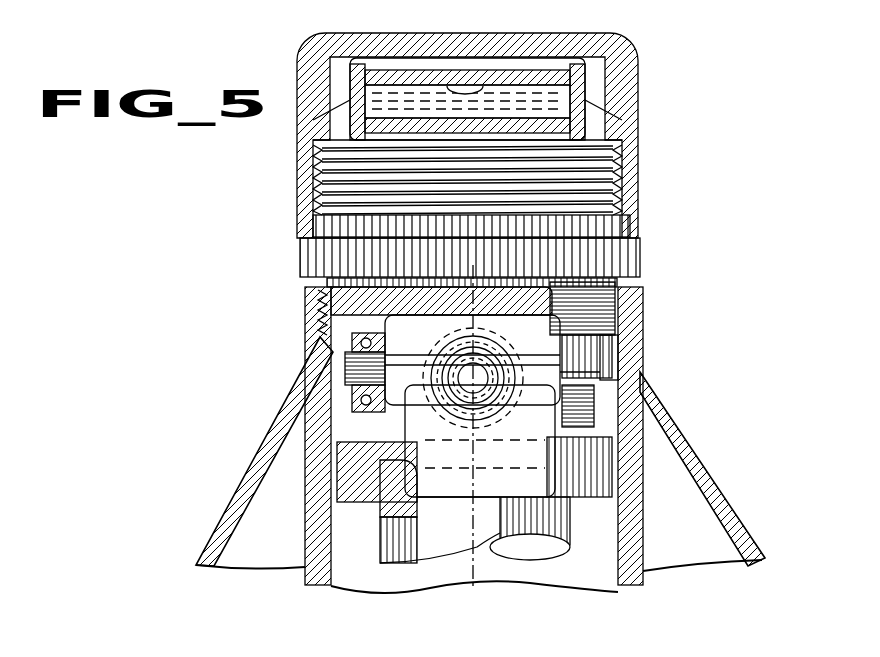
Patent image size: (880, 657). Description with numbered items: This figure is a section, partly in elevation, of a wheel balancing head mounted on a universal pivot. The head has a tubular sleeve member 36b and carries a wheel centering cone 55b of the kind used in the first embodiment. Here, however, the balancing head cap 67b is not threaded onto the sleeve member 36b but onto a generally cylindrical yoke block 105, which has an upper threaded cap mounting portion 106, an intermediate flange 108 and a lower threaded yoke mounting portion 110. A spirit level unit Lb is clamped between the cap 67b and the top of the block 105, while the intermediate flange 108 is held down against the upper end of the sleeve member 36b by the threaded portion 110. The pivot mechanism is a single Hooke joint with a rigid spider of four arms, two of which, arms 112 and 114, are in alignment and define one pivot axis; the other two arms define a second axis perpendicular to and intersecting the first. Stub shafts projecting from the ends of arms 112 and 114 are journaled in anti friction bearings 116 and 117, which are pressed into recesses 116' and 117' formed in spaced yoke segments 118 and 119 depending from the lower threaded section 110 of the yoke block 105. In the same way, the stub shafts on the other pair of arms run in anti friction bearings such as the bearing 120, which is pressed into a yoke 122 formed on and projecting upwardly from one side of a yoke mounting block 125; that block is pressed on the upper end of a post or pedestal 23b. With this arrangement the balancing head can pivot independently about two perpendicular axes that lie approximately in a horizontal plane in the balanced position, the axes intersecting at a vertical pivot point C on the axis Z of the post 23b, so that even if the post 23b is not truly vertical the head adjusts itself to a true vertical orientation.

The spirit level unit Lb is at (527, 72).
The balancing head cap 67b is at (640, 75).
The upper threaded cap mounting portion 106 is at (625, 152).
The yoke block 105 is at (628, 223).
The intermediate flange 108 is at (640, 254).
The lower threaded yoke mounting portion 110 is at (620, 296).
The sleeve member 36b is at (320, 548).
The wheel centering cone 55b is at (243, 447).
The arm 112 is at (402, 358).
The yoke segment 118 is at (345, 364).
The anti friction bearing 116 is at (306, 398).
The recess 116' is at (304, 347).
The anti friction bearing 120 is at (440, 380).
The vertical pivot point C is at (475, 376).
The post axis Z is at (471, 426).
The yoke mounting block 125 is at (345, 486).
The arm 114 is at (546, 368).
The yoke segment 119 is at (600, 350).
The anti friction bearing 117 is at (637, 406).
The recess 117' is at (641, 370).
The yoke 122 is at (530, 430).
The post 23b is at (387, 545).